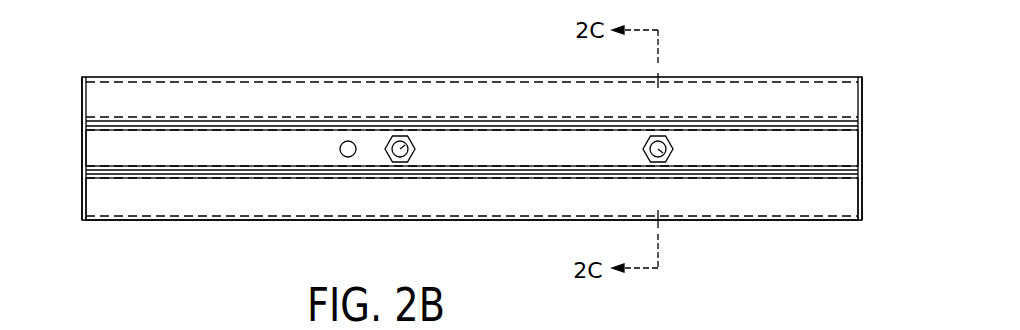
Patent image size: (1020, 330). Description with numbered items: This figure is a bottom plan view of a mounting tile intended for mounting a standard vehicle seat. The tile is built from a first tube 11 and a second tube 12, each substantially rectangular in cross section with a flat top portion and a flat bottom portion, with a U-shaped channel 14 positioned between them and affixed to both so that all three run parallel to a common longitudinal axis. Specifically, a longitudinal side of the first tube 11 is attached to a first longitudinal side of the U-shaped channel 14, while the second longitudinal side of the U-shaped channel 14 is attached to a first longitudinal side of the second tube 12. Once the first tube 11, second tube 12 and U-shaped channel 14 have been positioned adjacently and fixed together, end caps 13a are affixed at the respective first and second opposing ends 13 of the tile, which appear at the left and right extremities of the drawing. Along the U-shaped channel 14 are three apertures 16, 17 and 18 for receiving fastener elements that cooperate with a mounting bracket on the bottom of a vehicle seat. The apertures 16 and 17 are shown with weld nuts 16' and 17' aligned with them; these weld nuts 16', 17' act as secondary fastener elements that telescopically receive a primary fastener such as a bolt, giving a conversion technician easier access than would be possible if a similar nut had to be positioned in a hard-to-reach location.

The first tube 11 is at (188, 96).
The second tube 12 is at (128, 200).
The opposing ends 13 is at (137, 96).
The end caps 13a is at (83, 152).
The U-shaped channel 14 is at (108, 152).
The aperture 16 is at (687, 215).
The weld nut 16' is at (719, 208).
The aperture 17 is at (425, 94).
The weld nut 17' is at (385, 91).
The aperture 18 is at (343, 143).